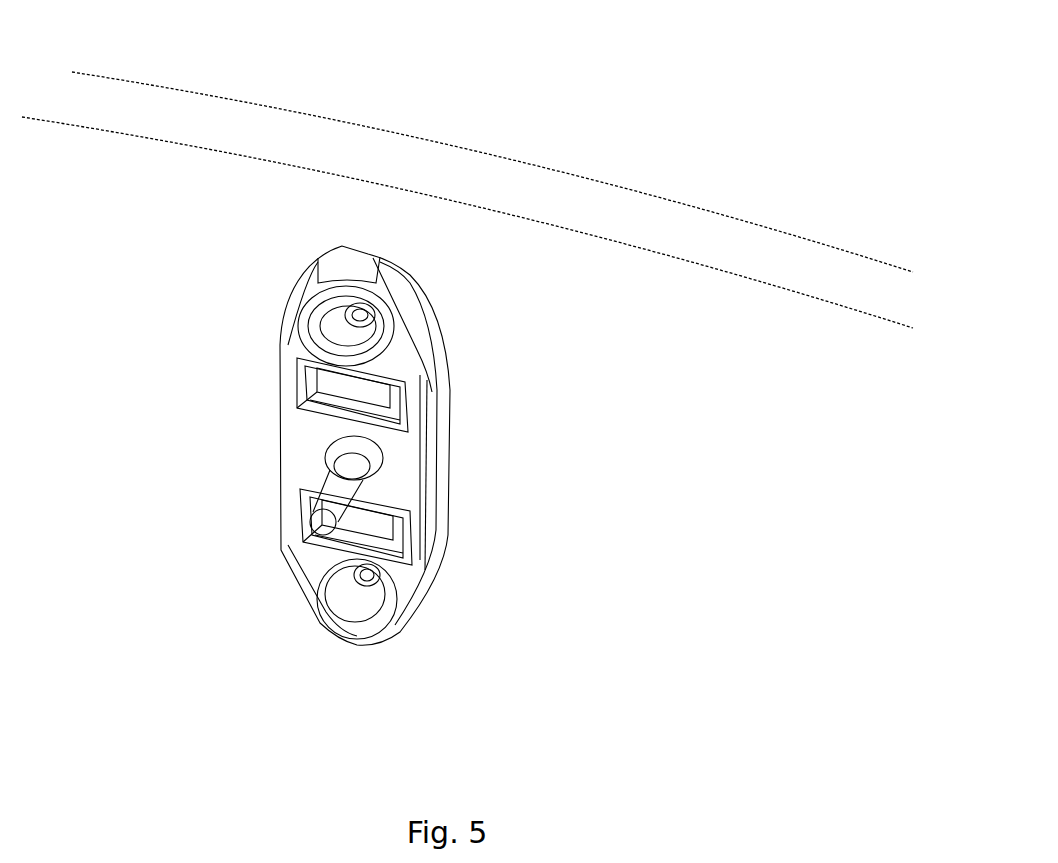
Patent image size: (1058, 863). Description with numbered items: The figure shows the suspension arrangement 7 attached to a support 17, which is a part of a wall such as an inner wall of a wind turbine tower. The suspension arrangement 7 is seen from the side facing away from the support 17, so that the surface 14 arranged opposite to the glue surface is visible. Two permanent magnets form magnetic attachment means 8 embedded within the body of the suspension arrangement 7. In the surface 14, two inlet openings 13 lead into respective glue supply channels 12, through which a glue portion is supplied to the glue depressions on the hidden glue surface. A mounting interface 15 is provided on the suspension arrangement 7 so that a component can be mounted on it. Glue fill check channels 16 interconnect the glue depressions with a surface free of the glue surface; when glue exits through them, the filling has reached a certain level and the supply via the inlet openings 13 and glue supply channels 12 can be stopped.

The suspension arrangement 7 is at (540, 455).
The magnetic attachment means 8 is at (353, 387).
The glue supply channels 12 is at (357, 316).
The inlet opening 13 is at (332, 330).
The surface 14 is at (303, 444).
The mounting interface 15 is at (338, 491).
The glue fill check channels 16 is at (370, 255).
The support 17 is at (87, 160).